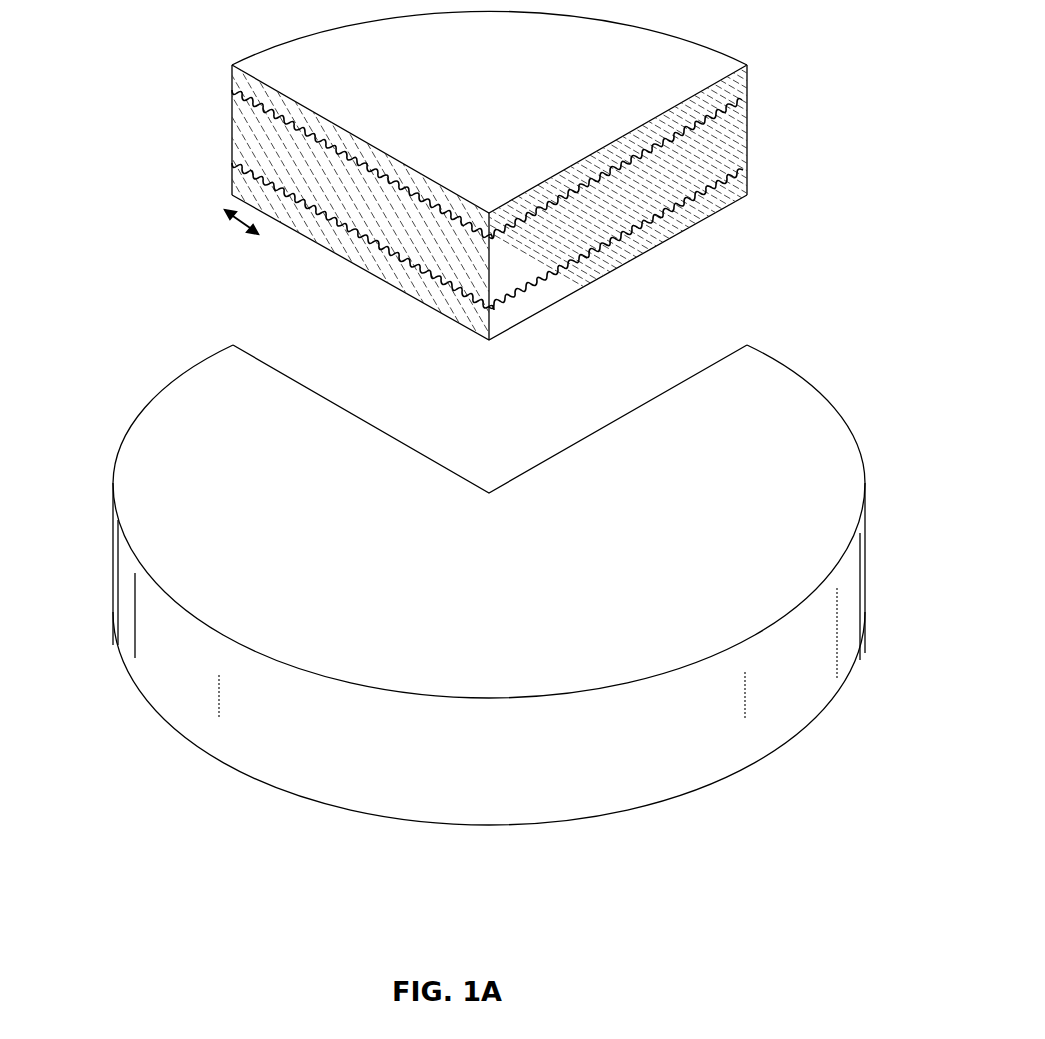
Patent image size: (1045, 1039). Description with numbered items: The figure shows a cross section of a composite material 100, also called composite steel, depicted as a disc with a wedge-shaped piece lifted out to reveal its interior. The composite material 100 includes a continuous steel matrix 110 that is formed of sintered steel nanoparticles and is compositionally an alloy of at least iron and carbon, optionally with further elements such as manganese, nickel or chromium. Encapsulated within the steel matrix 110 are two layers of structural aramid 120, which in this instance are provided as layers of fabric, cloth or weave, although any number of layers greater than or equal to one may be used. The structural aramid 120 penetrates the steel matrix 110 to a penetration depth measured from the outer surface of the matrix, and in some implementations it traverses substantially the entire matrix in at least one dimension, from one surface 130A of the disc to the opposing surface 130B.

The composite material 100 is at (148, 214).
The continuous steel matrix 110 is at (717, 139).
The structural aramid 120 is at (747, 113).
The surface 130A is at (98, 578).
The opposing surface 130B is at (880, 576).